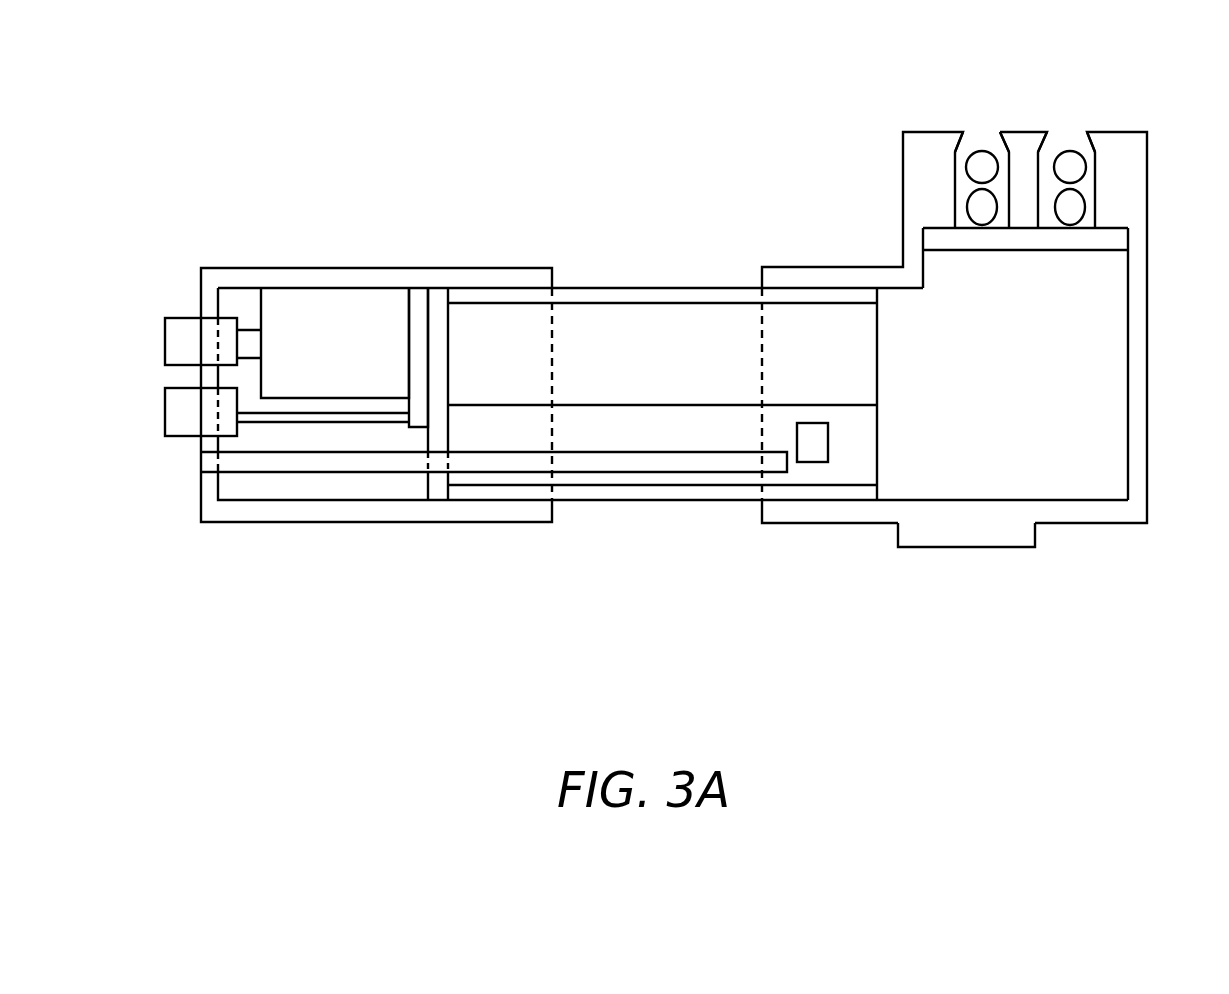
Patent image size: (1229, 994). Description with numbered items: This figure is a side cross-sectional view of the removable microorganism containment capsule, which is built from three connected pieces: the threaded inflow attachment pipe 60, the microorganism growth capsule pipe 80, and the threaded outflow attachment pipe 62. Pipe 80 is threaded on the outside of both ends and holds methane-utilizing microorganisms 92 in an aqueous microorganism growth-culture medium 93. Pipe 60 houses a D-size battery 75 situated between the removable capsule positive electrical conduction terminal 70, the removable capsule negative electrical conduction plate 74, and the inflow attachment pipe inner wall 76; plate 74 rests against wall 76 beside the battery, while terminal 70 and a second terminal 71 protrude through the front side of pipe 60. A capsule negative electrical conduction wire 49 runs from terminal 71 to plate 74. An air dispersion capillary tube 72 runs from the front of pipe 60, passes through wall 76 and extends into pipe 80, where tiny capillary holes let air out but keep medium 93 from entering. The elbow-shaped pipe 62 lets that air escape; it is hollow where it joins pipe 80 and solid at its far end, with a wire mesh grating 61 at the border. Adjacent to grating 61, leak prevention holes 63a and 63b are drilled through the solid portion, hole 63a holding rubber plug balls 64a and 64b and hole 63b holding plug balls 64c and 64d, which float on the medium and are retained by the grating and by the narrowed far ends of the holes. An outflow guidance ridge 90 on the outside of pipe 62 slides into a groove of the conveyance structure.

The capsule negative electrical conduction wire 49 is at (390, 417).
The threaded inflow attachment pipe 60 is at (317, 513).
The wire mesh grating 61 is at (937, 240).
The threaded outflow attachment pipe 62 is at (1102, 512).
The leak prevention hole 63a is at (997, 143).
The leak prevention hole 63b is at (1052, 142).
The plug ball 64a is at (980, 165).
The plug ball 64b is at (980, 208).
The plug ball 64c is at (1073, 165).
The plug ball 64d is at (1072, 203).
The removable capsule positive electrical conduction terminal 70 is at (179, 329).
The terminal 71 is at (178, 427).
The air dispersion capillary tube 72 is at (258, 462).
The removable capsule negative electrical conduction plate 74 is at (422, 303).
The D-size battery 75 is at (345, 302).
The inflow attachment pipe inner wall 76 is at (442, 302).
The microorganism growth capsule pipe 80 is at (667, 297).
The outflow guidance ridge 90 is at (983, 537).
The methane-utilizing microorganisms 92 is at (810, 450).
The microorganism growth-culture medium 93 is at (855, 463).